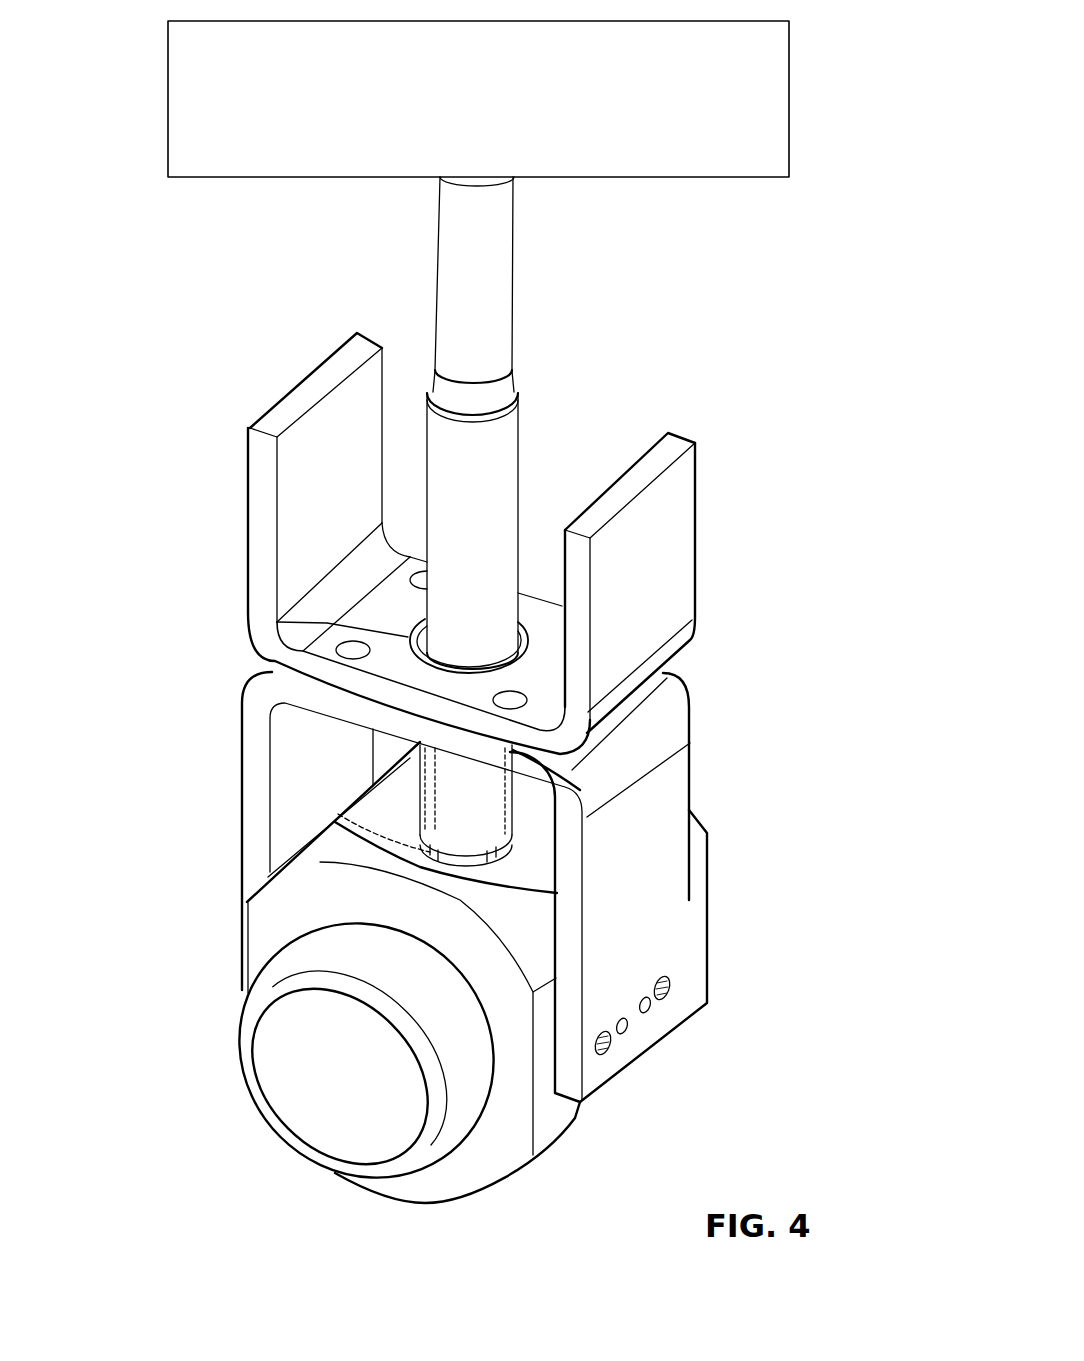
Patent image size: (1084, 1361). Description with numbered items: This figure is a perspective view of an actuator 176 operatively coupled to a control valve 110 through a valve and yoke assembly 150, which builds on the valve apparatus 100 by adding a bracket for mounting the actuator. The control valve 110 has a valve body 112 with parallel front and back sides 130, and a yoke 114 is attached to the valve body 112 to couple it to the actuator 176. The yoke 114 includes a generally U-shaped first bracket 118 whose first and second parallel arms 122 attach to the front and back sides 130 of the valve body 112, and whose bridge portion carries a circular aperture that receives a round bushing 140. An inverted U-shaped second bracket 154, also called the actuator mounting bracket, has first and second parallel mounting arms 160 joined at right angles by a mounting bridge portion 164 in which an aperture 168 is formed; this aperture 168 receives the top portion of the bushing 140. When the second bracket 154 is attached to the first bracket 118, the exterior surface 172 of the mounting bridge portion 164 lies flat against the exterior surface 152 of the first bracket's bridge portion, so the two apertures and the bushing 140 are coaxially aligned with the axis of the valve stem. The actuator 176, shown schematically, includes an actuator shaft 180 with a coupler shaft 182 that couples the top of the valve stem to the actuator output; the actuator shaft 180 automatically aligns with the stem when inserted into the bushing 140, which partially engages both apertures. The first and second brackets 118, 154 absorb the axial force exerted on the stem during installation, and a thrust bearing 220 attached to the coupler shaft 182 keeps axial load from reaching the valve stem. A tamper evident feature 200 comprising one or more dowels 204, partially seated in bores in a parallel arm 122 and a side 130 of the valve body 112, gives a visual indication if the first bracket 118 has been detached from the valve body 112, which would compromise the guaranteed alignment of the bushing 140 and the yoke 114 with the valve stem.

The valve apparatus 100 is at (857, 769).
The control valve 110 is at (193, 1077).
The valve body 112 is at (267, 923).
The yoke 114 is at (842, 514).
The first bracket 118 is at (686, 768).
The parallel arms 122 is at (672, 900).
The parallel front side and back side 130 is at (570, 1108).
The bushing 140 is at (520, 623).
The valve and yoke assembly 150 is at (118, 508).
The exterior surface of the bridge portion 152 is at (345, 676).
The second bracket 154 is at (680, 485).
The parallel mounting arms 160 is at (265, 491).
The mounting bridge portion 164 is at (383, 665).
The aperture 168 is at (327, 623).
The exterior surface of the mounting bridge portion 172 is at (469, 821).
The actuator 176 is at (770, 118).
The actuator shaft 180 is at (495, 310).
The coupler shaft 182 is at (447, 800).
The tamper evident feature 200 is at (621, 981).
The dowel 204 is at (651, 1010).
The thrust bearing 220 is at (365, 845).